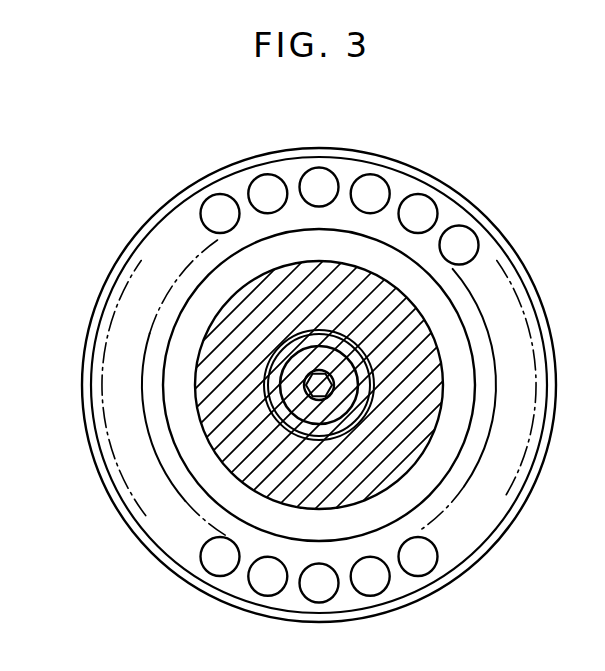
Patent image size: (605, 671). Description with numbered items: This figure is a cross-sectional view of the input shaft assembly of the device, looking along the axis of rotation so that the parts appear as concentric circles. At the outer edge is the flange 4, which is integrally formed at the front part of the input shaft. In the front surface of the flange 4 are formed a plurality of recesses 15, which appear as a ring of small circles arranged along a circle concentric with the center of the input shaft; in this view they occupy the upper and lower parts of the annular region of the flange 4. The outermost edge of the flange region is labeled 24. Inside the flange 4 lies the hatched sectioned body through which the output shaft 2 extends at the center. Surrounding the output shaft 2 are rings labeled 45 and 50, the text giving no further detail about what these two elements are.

The output shaft 2 is at (423, 442).
The flange 4 is at (233, 185).
The recesses 15 is at (318, 185).
The flange ring 24 is at (458, 198).
The bearing 45 is at (321, 334).
The shaft 50 is at (280, 395).